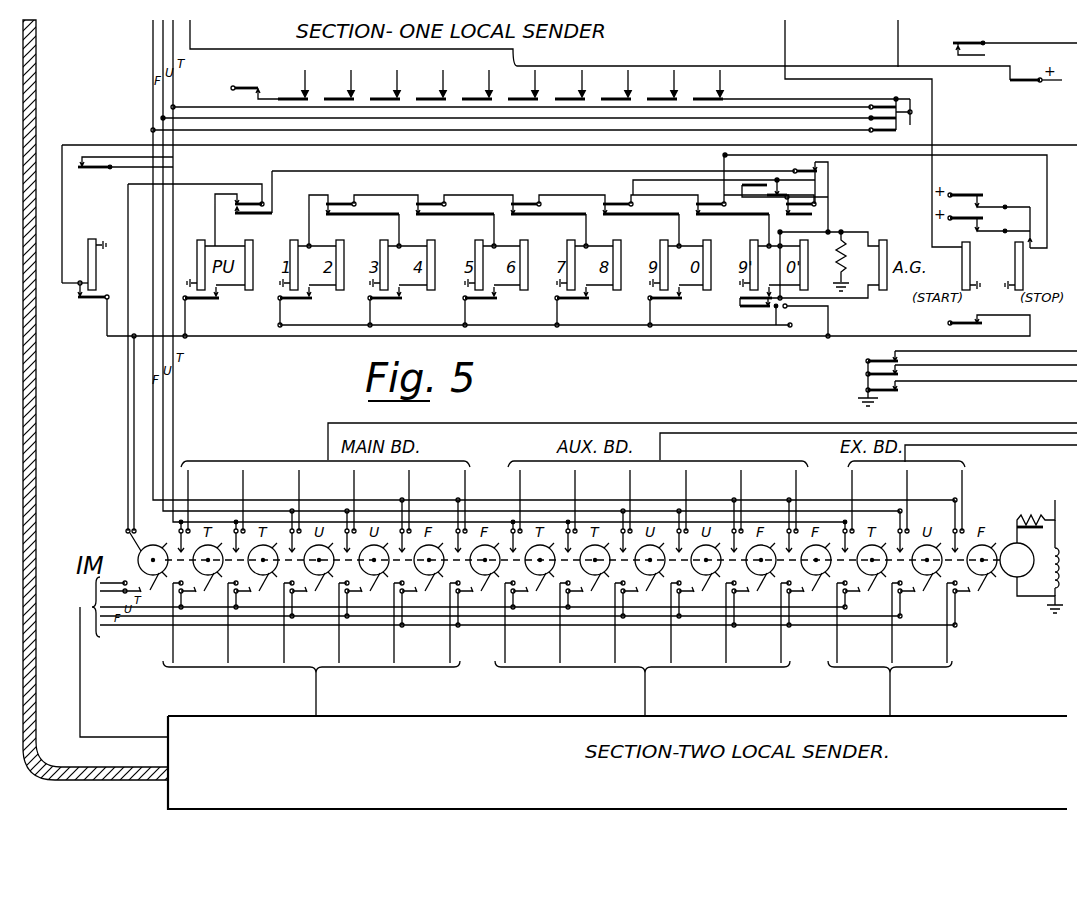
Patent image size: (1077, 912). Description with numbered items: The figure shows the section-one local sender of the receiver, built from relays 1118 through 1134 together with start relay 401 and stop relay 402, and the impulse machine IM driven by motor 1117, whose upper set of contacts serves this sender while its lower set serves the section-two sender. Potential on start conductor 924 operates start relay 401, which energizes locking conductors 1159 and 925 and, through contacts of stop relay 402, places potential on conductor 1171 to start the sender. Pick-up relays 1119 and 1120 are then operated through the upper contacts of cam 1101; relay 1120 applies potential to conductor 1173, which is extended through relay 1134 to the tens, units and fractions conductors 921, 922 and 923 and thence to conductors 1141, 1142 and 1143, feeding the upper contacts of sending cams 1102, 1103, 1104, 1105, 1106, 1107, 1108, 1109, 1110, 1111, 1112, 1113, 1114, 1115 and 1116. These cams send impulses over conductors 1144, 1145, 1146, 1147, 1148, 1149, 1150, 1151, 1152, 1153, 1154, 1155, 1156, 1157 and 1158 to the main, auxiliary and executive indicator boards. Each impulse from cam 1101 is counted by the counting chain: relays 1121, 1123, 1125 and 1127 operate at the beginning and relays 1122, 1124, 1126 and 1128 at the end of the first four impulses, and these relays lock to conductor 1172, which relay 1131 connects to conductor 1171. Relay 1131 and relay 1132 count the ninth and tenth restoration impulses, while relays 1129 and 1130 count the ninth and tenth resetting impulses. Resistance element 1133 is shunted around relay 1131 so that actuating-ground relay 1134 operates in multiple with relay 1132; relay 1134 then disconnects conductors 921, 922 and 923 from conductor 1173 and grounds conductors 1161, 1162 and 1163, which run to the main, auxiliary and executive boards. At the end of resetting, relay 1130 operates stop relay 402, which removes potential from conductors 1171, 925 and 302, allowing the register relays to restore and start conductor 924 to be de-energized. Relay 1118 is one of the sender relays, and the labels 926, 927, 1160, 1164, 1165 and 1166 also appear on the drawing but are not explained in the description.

The cabinet wall 926 is at (37, 48).
The section-one local sender conductor 927 is at (190, 30).
The tens operating conductor 921 is at (154, 30).
The units operating conductor 922 is at (164, 47).
The fractions operating conductor 923 is at (153, 63).
The start conductor 924 is at (785, 30).
The locking conductor 302 is at (898, 30).
The locking conductor 1159 is at (1015, 49).
The conductor 1160 is at (569, 207).
The locking conductor 925 is at (899, 200).
The conductor 1173 is at (262, 96).
The relay 1118 is at (89, 240).
The pick-up relay 1119 is at (199, 241).
The pick-up relay 1120 is at (247, 241).
The counting relay 1121 is at (292, 241).
The counting relay 1122 is at (338, 241).
The counting relay 1123 is at (382, 241).
The counting relay 1124 is at (429, 241).
The counting relay 1125 is at (477, 241).
The counting relay 1126 is at (522, 241).
The counting relay 1127 is at (569, 241).
The counting relay 1128 is at (615, 241).
The counting relay 1129 is at (662, 241).
The counting relay 1130 is at (705, 241).
The counting relay 1131 is at (752, 241).
The counting relay 1132 is at (804, 244).
The resistance element 1133 is at (843, 268).
The actuating-ground relay 1134 is at (886, 236).
The start relay 401 is at (968, 250).
The stop relay 402 is at (1023, 262).
The locking conductor 1172 is at (714, 326).
The locking conductor 1171 is at (724, 338).
The actuating-ground conductor 1161 is at (972, 349).
The actuating-ground conductor 1162 is at (972, 363).
The actuating-ground conductor 1163 is at (972, 379).
The conductor 1164 is at (702, 434).
The conductor 1165 is at (868, 442).
The conductor 1166 is at (991, 447).
The tens conductor 1141 is at (173, 392).
The units conductor 1142 is at (163, 410).
The fractions conductor 1143 is at (153, 428).
The impulse conductor 1144 is at (188, 481).
The impulse conductor 1145 is at (243, 481).
The impulse conductor 1146 is at (299, 481).
The impulse conductor 1147 is at (354, 481).
The impulse conductor 1148 is at (409, 481).
The impulse conductor 1149 is at (465, 481).
The impulse conductor 1150 is at (520, 481).
The impulse conductor 1151 is at (575, 481).
The impulse conductor 1152 is at (630, 481).
The impulse conductor 1153 is at (686, 481).
The impulse conductor 1154 is at (741, 481).
The impulse conductor 1155 is at (796, 481).
The impulse conductor 1156 is at (852, 481).
The impulse conductor 1157 is at (907, 481).
The impulse conductor 1158 is at (962, 481).
The cam 1101 is at (158, 540).
The sending cam 1102 is at (213, 591).
The sending cam 1103 is at (268, 591).
The sending cam 1104 is at (324, 586).
The sending cam 1105 is at (379, 586).
The fractions sending cam 1106 is at (434, 580).
The fractions sending cam 1107 is at (490, 580).
The sending cam 1108 is at (545, 591).
The sending cam 1109 is at (600, 591).
The sending cam 1110 is at (655, 586).
The sending cam 1111 is at (711, 586).
The fractions sending cam 1112 is at (766, 580).
The fractions sending cam 1113 is at (821, 580).
The sending cam 1114 is at (877, 591).
The sending cam 1115 is at (932, 586).
The fractions sending cam 1116 is at (987, 580).
The driving motor 1117 is at (1031, 554).